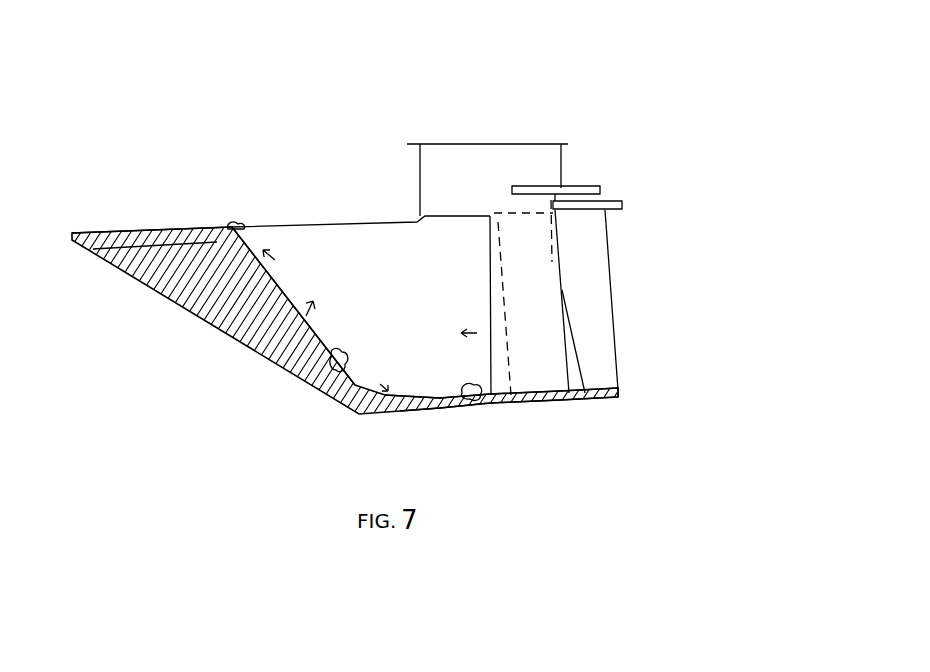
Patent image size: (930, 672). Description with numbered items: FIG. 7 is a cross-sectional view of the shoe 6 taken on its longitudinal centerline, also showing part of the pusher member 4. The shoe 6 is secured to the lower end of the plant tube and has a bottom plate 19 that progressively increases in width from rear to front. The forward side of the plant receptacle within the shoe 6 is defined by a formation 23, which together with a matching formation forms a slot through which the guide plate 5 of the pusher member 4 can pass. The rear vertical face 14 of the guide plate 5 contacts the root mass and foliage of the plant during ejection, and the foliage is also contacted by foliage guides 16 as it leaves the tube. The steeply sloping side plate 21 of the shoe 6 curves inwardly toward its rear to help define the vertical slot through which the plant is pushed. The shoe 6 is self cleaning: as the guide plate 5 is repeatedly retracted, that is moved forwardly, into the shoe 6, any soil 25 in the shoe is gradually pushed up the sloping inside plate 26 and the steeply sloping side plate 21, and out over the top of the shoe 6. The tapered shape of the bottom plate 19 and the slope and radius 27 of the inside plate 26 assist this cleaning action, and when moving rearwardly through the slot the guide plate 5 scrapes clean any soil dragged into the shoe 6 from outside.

The pusher member 4 is at (561, 166).
The guide plate 5 is at (467, 146).
The shoe 6 is at (300, 384).
The rear vertical face 14 is at (560, 240).
The foliage guides 16 is at (582, 186).
The bottom plate 19 is at (520, 405).
The sidewall 21 is at (427, 291).
The formation 23 is at (577, 353).
The soil 25 is at (337, 401).
The inside plate 26 is at (279, 281).
The radius 27 is at (387, 388).